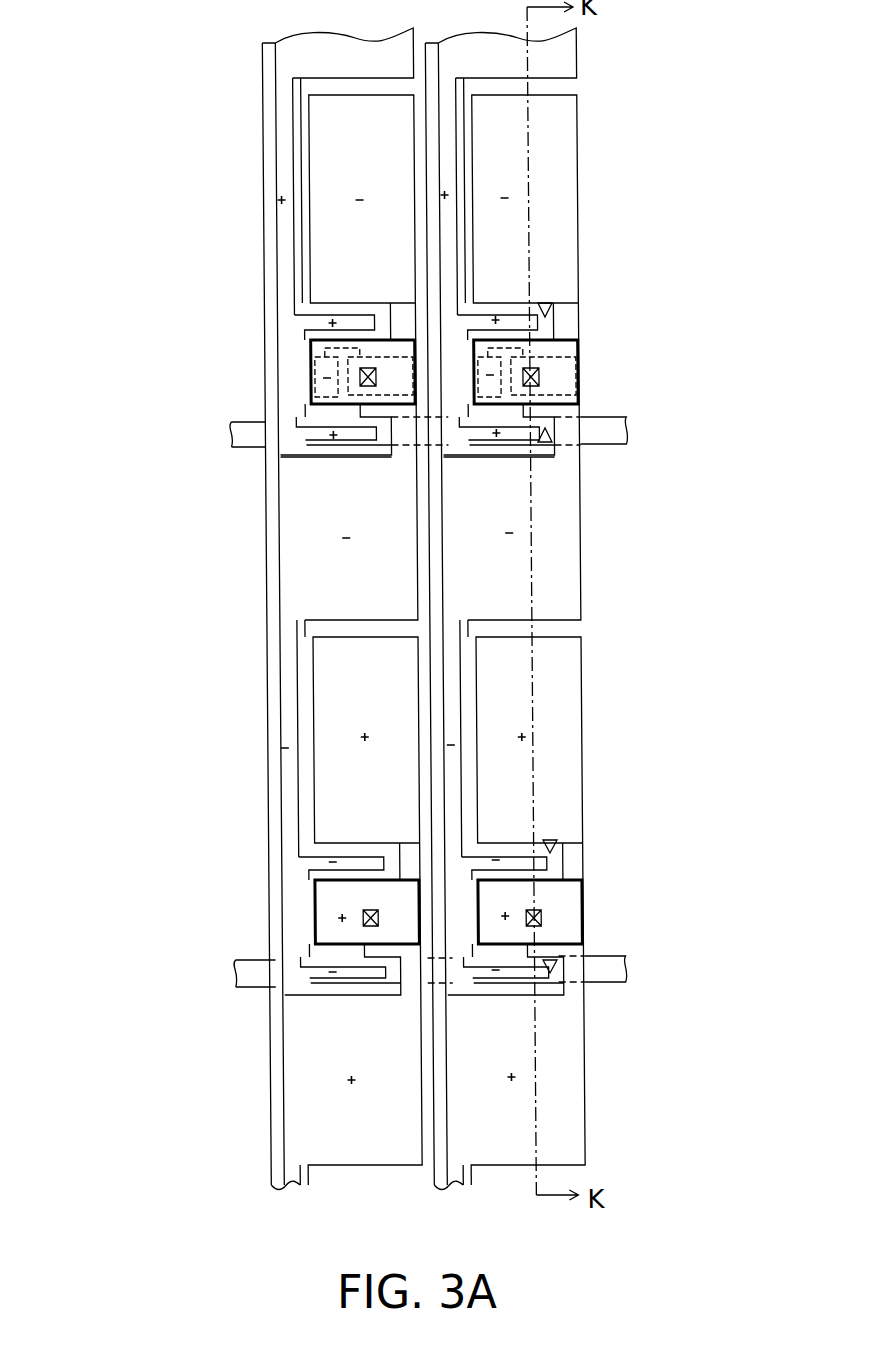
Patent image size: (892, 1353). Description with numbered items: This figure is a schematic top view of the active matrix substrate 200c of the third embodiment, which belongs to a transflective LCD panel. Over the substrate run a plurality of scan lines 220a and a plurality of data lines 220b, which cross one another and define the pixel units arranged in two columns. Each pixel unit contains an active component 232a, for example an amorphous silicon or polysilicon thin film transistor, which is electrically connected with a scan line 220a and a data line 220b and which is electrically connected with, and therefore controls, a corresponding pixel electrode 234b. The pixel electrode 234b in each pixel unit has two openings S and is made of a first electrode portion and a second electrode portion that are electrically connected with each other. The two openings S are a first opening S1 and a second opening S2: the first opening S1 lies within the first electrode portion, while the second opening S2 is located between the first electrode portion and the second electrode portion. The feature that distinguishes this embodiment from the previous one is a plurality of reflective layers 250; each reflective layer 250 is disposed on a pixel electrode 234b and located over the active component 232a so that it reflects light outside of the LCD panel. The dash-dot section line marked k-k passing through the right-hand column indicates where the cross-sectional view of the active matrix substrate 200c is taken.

The active matrix substrate 200c is at (720, 1232).
The scan line 220a is at (612, 968).
The data line 220b is at (450, 1212).
The active component 232a is at (573, 344).
The pixel electrode 234b is at (332, 915).
The reflective layer 250 is at (585, 893).
The first opening S1 is at (545, 310).
The second opening S2 is at (545, 445).
The opening S is at (550, 966).